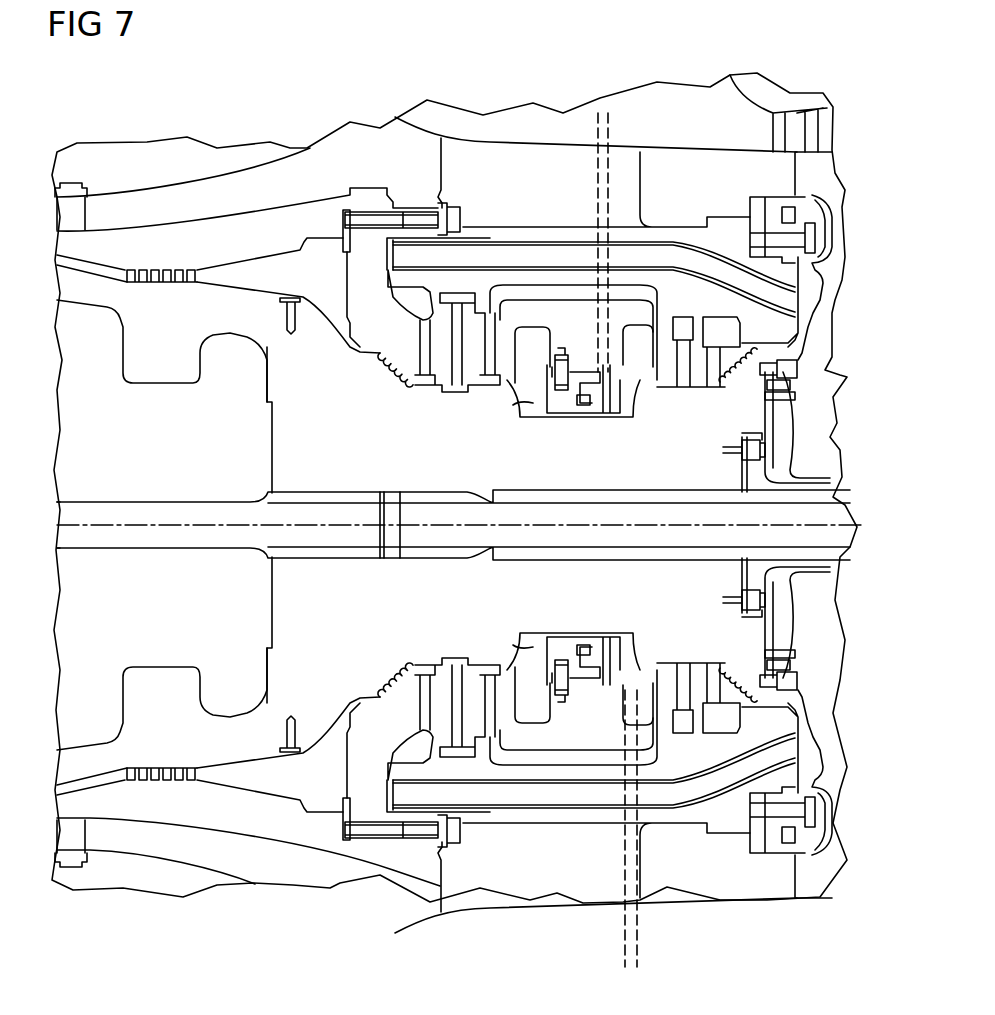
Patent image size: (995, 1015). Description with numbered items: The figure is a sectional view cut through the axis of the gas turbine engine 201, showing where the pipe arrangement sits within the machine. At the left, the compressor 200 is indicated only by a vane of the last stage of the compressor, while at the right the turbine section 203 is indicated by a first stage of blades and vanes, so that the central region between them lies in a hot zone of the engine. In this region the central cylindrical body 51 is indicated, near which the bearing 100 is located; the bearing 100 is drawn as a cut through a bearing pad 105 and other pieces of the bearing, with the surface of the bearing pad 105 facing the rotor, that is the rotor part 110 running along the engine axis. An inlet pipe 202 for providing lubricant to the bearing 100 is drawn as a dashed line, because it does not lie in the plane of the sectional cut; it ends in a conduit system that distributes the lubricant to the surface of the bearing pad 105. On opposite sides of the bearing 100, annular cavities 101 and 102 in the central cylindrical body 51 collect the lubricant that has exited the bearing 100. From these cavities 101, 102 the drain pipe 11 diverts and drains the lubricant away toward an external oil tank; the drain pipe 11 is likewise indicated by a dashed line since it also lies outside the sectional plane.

The compressor 200 is at (93, 180).
The inlet pipe 202 is at (611, 129).
The turbine section 203 is at (817, 88).
The central cylindrical body 51 is at (697, 300).
The gas turbine engine 201 is at (826, 390).
The rotor part 110 is at (350, 438).
The bearing 100 is at (587, 428).
The bearing pad 105 is at (575, 407).
The annular cavity 101 is at (530, 404).
The annular cavity 102 is at (632, 368).
The drain pipe 11 is at (639, 930).